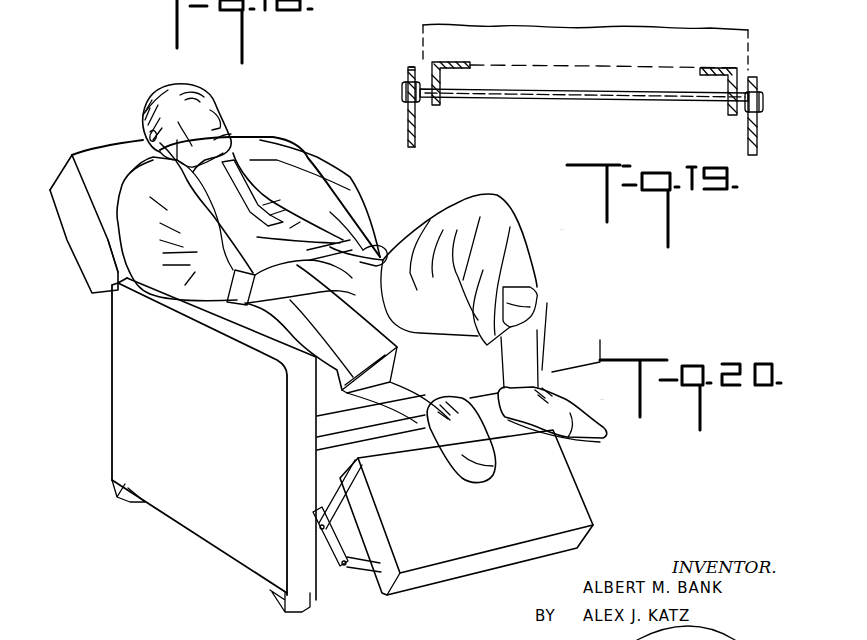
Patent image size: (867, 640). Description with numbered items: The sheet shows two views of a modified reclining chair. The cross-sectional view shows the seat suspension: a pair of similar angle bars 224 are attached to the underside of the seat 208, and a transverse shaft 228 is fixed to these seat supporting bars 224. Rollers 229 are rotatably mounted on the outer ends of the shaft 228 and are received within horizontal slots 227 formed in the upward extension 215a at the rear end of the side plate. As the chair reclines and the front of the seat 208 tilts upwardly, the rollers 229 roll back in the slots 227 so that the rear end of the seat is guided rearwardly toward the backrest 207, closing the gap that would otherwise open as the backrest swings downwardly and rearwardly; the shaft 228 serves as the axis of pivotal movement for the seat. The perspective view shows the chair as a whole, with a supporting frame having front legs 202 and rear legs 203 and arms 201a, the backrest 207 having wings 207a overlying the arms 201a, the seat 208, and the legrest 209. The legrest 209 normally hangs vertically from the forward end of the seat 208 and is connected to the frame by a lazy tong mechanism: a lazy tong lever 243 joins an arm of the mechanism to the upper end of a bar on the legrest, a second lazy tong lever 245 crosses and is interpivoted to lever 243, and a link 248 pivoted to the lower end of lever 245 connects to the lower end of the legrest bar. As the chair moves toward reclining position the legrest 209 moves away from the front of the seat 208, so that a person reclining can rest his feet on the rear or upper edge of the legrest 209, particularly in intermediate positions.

In FIG. 19, the seat 208 is at (748, 51).
In FIG. 20, the seat 208 is at (483, 370).
In FIG. 19, the angle bar 224 is at (450, 78).
In FIG. 19, the horizontal slot 227 is at (403, 67).
In FIG. 19, the transverse shaft 228 is at (585, 97).
In FIG. 19, the roller 229 is at (402, 87).
In FIG. 19, the upward extension 215a is at (408, 125).
In FIG. 20, the backrest 207 is at (96, 136).
In FIG. 20, the wing 207a is at (78, 228).
In FIG. 20, the arm 201a is at (173, 305).
In FIG. 20, the rear leg 203 is at (127, 490).
In FIG. 20, the front leg 202 is at (282, 602).
In FIG. 20, the legrest 209 is at (573, 493).
In FIG. 20, the lazy tong lever 243 is at (333, 500).
In FIG. 20, the second lazy tong lever 245 is at (338, 556).
In FIG. 20, the link 248 is at (372, 568).